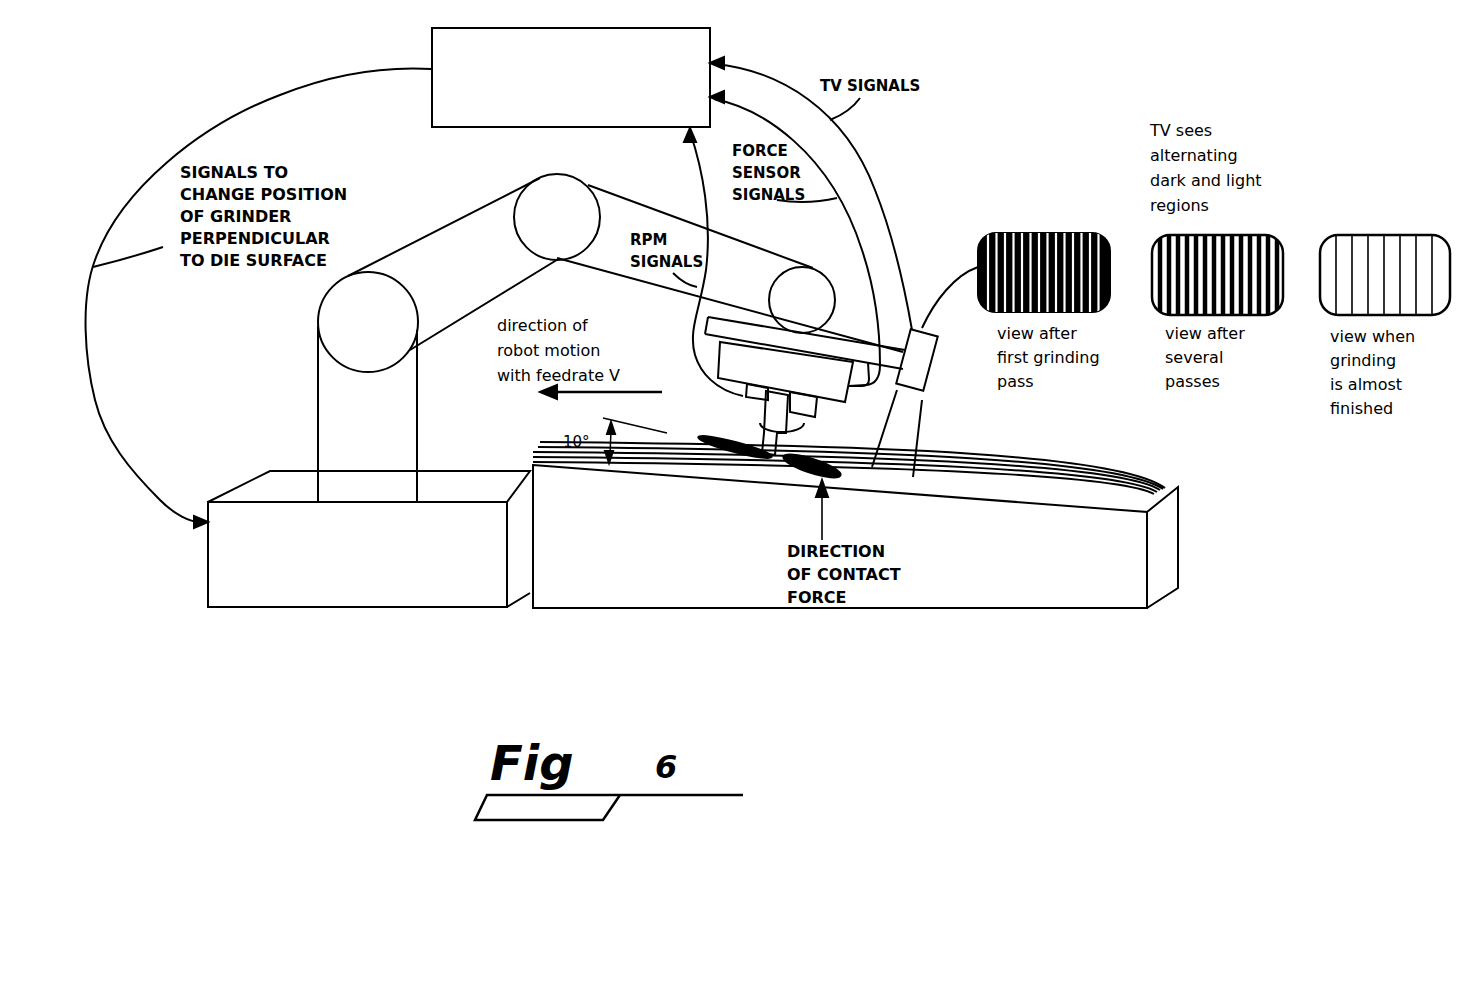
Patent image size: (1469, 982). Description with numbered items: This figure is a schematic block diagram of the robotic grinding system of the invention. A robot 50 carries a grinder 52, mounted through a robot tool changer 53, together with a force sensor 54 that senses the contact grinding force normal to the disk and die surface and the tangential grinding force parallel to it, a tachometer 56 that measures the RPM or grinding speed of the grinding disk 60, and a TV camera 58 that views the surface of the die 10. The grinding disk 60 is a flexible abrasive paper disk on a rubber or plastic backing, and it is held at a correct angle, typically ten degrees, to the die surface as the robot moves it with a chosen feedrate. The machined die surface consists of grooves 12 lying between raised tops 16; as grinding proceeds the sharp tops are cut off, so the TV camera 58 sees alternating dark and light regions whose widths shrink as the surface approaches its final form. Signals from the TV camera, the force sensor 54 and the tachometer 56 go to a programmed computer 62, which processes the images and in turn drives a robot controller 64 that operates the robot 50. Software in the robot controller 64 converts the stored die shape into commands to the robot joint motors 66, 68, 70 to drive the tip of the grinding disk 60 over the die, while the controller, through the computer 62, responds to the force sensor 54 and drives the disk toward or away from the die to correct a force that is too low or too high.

The die 10 is at (1163, 552).
The grooves 12 is at (1163, 483).
The tops 16 is at (1087, 465).
The robot 50 is at (300, 392).
The grinder 52 is at (693, 398).
The robot tool changer 53 is at (805, 405).
The force sensor 54 is at (785, 372).
The tachometer 56 is at (748, 394).
The TV camera 58 is at (930, 372).
The grinding disk 60 is at (800, 472).
The computer 62 is at (567, 128).
The robot controller 64 is at (400, 563).
The robot joint motor 66 is at (337, 327).
The robot joint motor 68 is at (588, 187).
The robot joint motor 70 is at (810, 287).